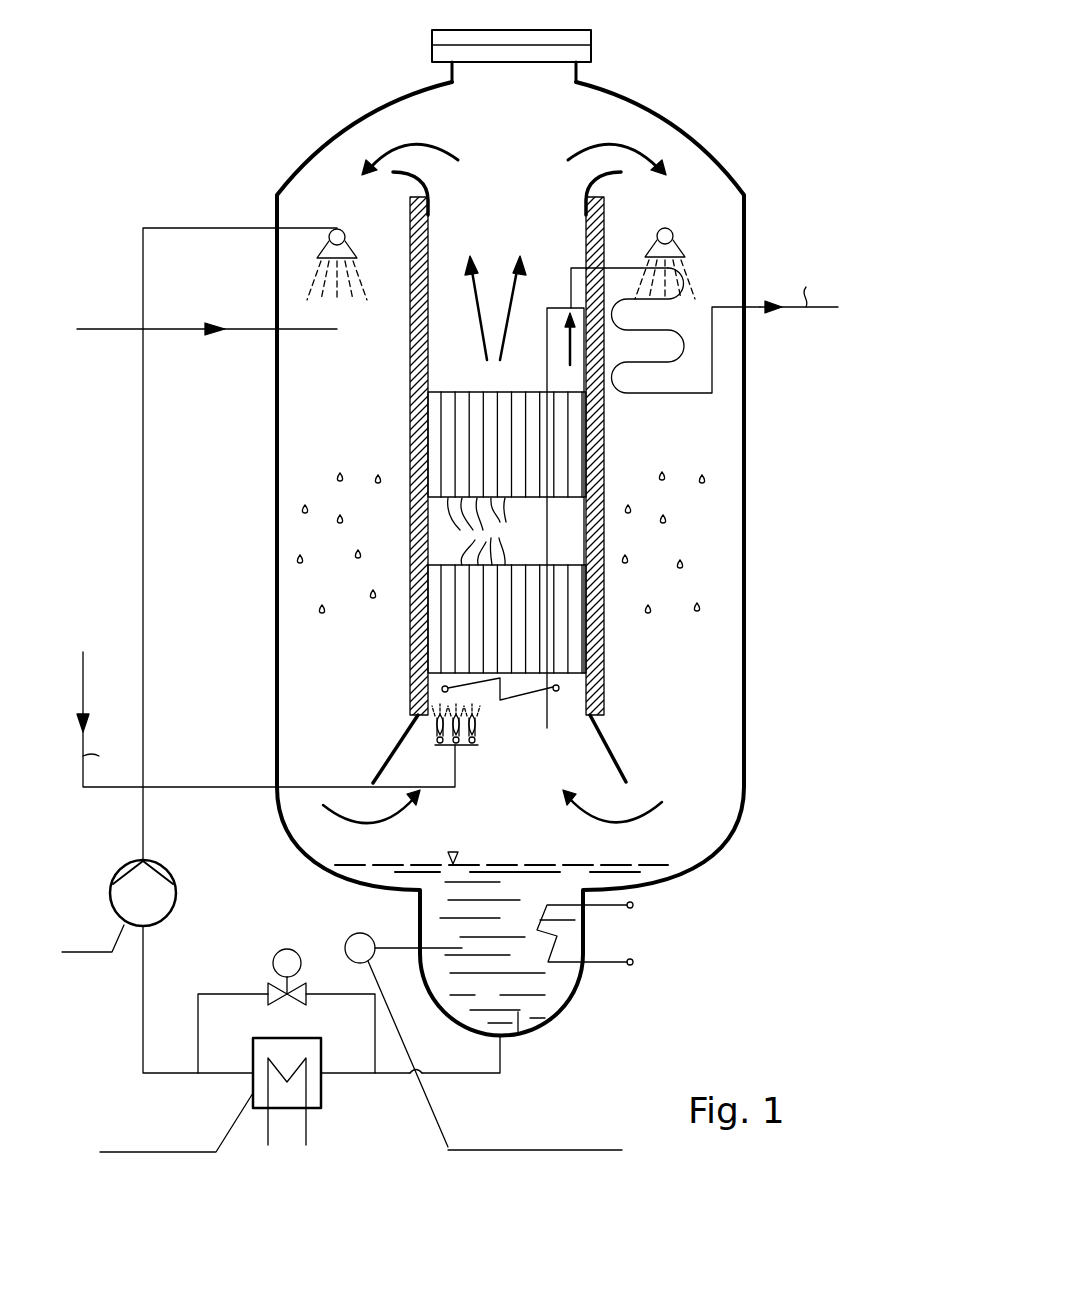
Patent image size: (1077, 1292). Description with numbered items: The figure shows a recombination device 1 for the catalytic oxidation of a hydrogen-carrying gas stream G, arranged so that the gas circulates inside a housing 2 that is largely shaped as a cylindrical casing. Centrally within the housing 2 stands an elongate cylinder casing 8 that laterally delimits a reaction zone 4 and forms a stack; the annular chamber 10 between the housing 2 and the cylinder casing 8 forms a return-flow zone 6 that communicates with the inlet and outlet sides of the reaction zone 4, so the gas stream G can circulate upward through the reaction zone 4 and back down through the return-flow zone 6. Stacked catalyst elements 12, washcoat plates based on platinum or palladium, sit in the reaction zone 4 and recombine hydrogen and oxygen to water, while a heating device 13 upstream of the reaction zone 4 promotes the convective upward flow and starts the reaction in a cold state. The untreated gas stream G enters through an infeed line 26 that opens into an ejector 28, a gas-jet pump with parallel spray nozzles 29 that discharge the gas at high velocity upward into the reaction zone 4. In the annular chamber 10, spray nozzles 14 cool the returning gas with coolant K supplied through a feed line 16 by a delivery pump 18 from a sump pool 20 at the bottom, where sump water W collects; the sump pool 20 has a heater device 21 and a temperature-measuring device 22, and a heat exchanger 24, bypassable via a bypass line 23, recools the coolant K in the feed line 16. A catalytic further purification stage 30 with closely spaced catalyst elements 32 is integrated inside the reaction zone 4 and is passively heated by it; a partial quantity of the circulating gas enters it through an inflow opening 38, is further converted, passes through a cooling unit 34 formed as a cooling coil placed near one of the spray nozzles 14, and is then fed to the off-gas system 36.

The recombination device 1 is at (672, 77).
The housing 2 is at (745, 227).
The reaction zone 4 is at (540, 231).
The return-flow zone 6 is at (352, 720).
The cylinder casing 8 is at (429, 223).
The annular chamber 10 is at (698, 516).
The catalyst elements 12 is at (477, 531).
The heating device 13 is at (462, 683).
The spray nozzles 14 is at (340, 229).
The feed line 16 is at (207, 650).
The delivery pump 18 is at (177, 898).
The sump pool 20 is at (568, 1008).
The heater device 21 is at (575, 946).
The temperature-measuring device 22 is at (400, 946).
The bypass line 23 is at (243, 994).
The heat exchanger 24 is at (322, 1096).
The infeed line 26 is at (228, 787).
The ejector 28 is at (478, 743).
The spray nozzles 29 is at (462, 727).
The further purification stage 30 is at (577, 390).
The catalyst elements 32 is at (563, 468).
The cooling unit 34 is at (680, 346).
The off-gas system 36 is at (818, 313).
The inflow opening 38 is at (582, 765).
The gas stream G is at (438, 143).
The coolant K is at (600, 878).
The sump water W is at (518, 1012).